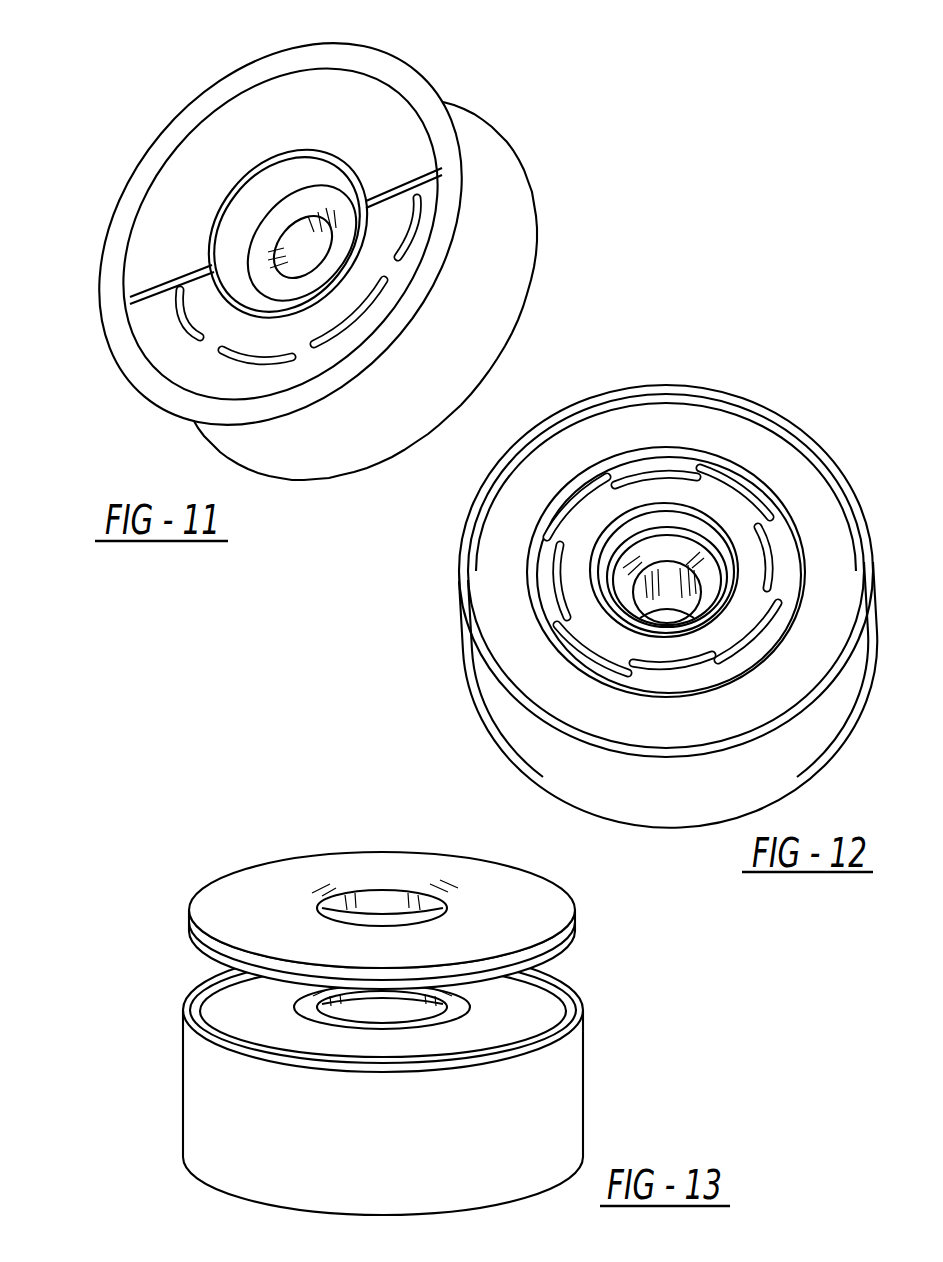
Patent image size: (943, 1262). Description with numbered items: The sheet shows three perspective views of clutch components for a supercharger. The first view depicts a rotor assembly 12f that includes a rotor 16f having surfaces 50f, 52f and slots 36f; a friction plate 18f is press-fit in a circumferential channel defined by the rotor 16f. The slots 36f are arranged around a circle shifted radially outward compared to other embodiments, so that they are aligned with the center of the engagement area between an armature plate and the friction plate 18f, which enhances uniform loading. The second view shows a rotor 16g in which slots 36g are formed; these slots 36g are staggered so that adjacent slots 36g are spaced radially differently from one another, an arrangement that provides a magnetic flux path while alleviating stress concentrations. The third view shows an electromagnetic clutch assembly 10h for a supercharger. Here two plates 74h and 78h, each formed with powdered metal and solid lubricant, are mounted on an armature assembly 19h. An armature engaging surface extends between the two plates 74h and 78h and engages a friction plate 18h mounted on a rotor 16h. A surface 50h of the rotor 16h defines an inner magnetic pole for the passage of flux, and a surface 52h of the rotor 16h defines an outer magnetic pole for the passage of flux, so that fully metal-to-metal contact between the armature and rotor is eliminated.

In FIG. 11, the rotor assembly 12f is at (323, 248).
In FIG. 11, the rotor 16f is at (407, 291).
In FIG. 11, the friction plate 18f is at (287, 248).
In FIG. 11, the slots 36f is at (363, 335).
In FIG. 11, the surface 50f is at (224, 233).
In FIG. 11, the surface 52f is at (354, 205).
In FIG. 12, the rotor 16g is at (668, 542).
In FIG. 12, the slots 36g is at (662, 504).
In FIG. 13, the electromagnetic clutch assembly 10h is at (368, 951).
In FIG. 13, the armature assembly 19h is at (354, 893).
In FIG. 13, the plate 74h is at (421, 920).
In FIG. 13, the plate 78h is at (385, 862).
In FIG. 13, the surface 52h is at (277, 1014).
In FIG. 13, the friction plate 18h is at (428, 1010).
In FIG. 13, the surface 50h is at (279, 1072).
In FIG. 13, the rotor 16h is at (432, 1081).